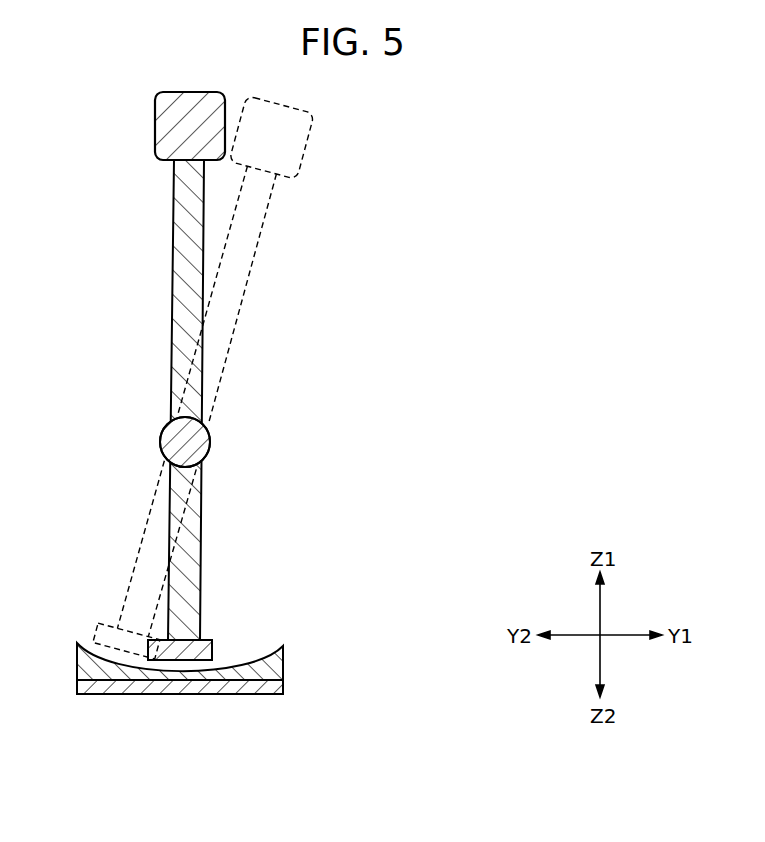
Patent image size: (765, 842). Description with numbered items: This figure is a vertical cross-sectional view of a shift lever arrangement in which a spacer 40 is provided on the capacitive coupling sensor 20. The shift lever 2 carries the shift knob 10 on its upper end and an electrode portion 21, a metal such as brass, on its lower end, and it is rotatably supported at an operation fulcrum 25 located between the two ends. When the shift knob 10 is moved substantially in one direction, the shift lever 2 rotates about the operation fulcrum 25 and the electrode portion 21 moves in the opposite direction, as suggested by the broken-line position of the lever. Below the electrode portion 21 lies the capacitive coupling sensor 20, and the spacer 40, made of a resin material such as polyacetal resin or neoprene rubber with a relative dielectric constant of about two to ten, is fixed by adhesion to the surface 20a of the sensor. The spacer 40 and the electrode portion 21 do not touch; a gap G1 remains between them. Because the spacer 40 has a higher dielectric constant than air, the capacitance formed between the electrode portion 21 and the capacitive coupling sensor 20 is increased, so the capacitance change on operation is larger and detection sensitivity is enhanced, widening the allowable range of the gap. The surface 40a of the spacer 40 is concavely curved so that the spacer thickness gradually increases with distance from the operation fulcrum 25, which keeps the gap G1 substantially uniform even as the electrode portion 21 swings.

The shift lever 2 is at (182, 252).
The shift knob 10 is at (163, 113).
The operation fulcrum 25 is at (208, 447).
The electrode portion 21 is at (207, 638).
The capacitive coupling sensor 20 is at (270, 693).
The surface of the capacitive coupling sensor 20a is at (227, 683).
The spacer 40 is at (273, 670).
The surface of the spacer 40a is at (127, 681).
The gap G1 is at (224, 660).